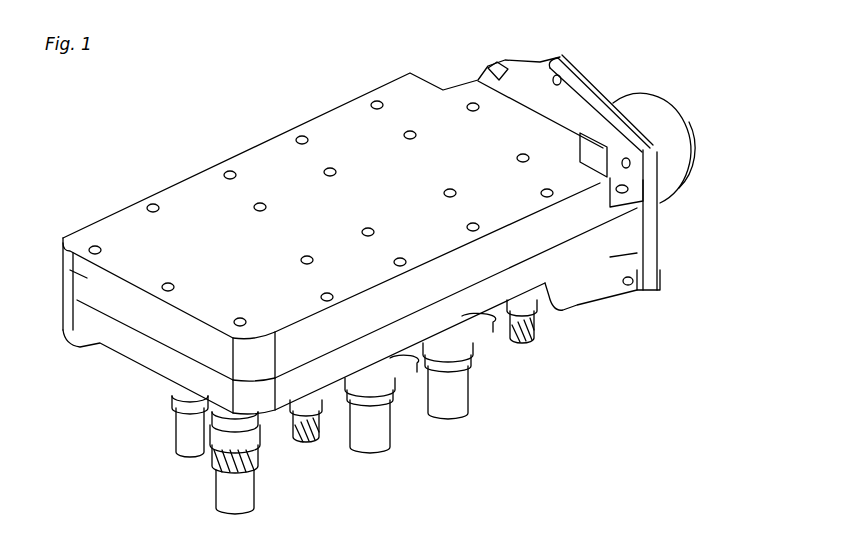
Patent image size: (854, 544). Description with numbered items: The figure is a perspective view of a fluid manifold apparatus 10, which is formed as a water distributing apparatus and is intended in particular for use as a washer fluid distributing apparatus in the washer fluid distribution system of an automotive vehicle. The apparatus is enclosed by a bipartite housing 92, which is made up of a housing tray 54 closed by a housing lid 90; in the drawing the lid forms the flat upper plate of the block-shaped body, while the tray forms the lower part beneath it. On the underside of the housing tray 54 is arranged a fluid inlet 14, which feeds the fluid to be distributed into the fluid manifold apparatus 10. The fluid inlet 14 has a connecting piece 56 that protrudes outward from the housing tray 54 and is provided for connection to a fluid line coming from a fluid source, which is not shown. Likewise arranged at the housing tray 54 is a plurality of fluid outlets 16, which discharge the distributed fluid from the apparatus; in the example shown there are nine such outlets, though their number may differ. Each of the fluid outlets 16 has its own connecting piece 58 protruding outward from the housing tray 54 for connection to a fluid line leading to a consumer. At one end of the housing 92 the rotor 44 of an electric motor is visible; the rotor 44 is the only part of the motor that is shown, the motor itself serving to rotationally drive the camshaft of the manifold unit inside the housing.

The fluid manifold apparatus 10 is at (233, 130).
The housing lid 90 is at (67, 252).
The housing 92 is at (120, 347).
The housing tray 54 is at (178, 378).
The fluid inlet 14 is at (288, 464).
The connecting piece 56 is at (243, 492).
The fluid outlets 16 is at (503, 366).
The connecting piece 58 is at (455, 397).
The rotor 44 is at (645, 110).